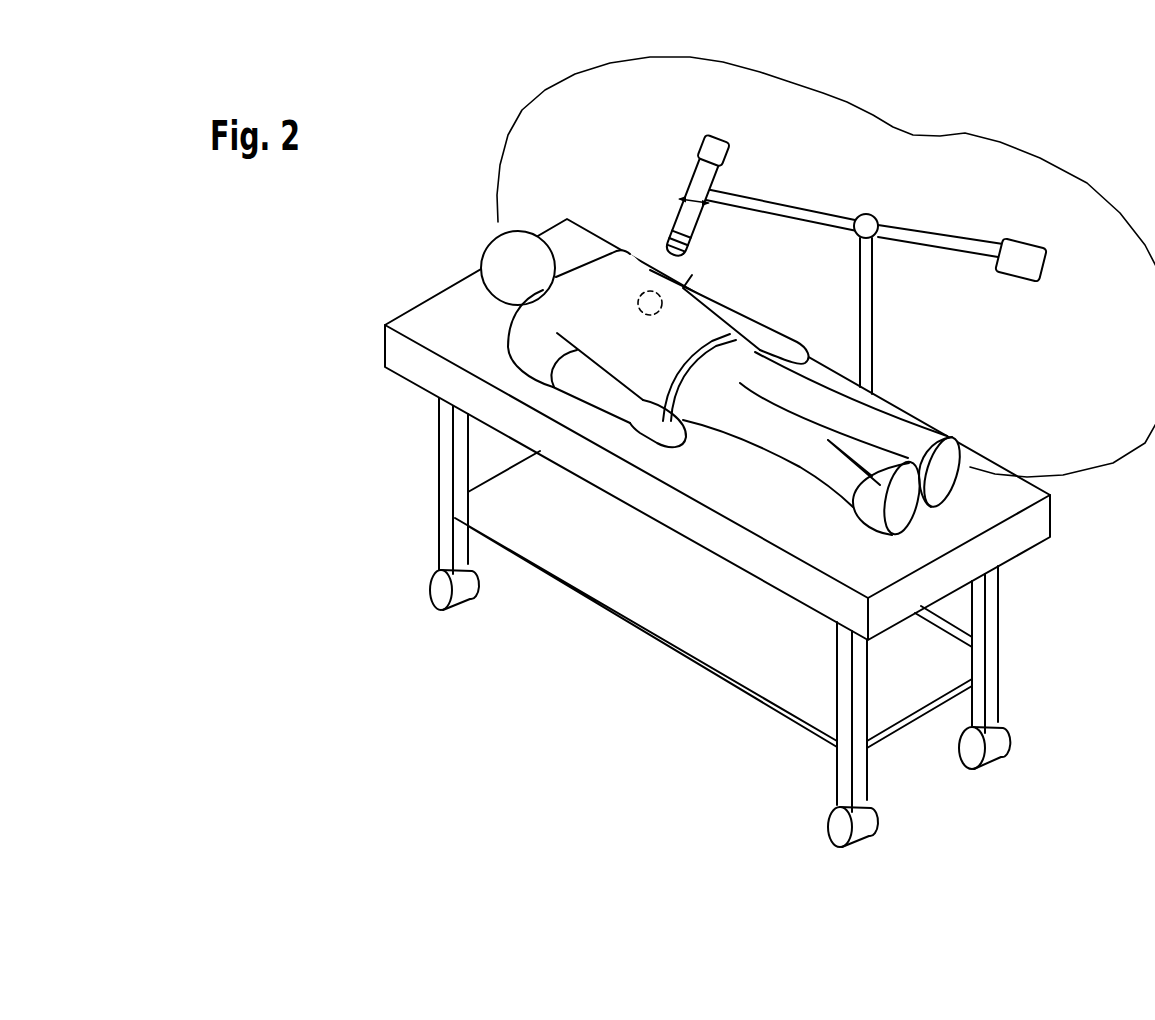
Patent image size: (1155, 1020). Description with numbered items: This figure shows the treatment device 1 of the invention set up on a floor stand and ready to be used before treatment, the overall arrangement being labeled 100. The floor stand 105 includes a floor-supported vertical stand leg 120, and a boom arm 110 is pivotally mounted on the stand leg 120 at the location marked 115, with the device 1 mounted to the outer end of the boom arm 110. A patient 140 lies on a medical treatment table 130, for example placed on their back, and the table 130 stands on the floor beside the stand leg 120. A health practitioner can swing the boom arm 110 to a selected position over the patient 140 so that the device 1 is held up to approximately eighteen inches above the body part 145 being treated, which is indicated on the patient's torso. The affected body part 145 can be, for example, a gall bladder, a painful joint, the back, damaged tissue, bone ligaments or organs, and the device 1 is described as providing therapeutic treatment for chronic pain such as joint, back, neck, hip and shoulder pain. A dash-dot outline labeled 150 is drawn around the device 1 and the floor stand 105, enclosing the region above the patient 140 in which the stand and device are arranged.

The device 1 is at (755, 142).
The medical positioning system 100 is at (444, 138).
The floor stand 105 is at (922, 195).
The boom arm 110 is at (770, 208).
The joint 115 is at (873, 235).
The vertical stand leg 120 is at (867, 327).
The medical treatment table 130 is at (420, 368).
The patient 140 is at (527, 334).
The body part 145 is at (636, 301).
The working region 150 is at (637, 57).